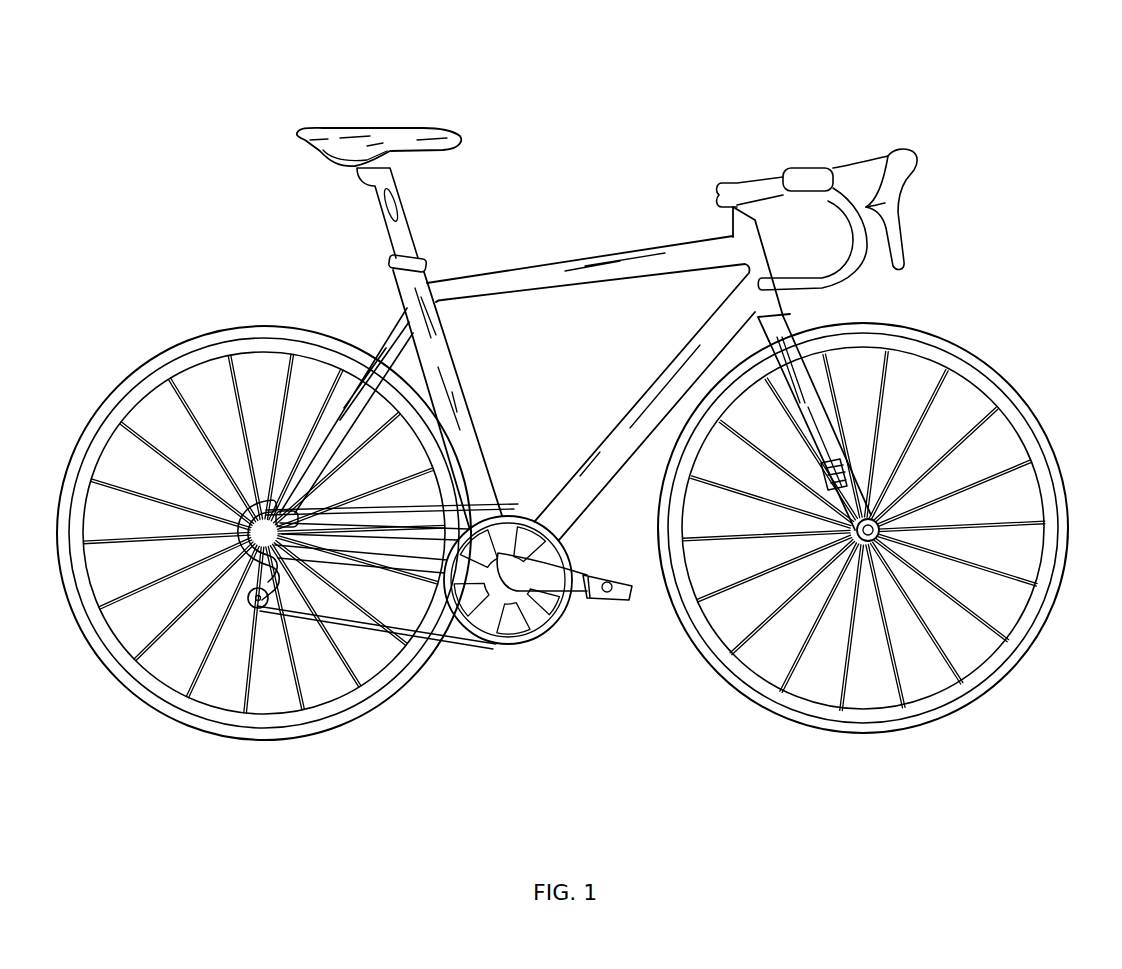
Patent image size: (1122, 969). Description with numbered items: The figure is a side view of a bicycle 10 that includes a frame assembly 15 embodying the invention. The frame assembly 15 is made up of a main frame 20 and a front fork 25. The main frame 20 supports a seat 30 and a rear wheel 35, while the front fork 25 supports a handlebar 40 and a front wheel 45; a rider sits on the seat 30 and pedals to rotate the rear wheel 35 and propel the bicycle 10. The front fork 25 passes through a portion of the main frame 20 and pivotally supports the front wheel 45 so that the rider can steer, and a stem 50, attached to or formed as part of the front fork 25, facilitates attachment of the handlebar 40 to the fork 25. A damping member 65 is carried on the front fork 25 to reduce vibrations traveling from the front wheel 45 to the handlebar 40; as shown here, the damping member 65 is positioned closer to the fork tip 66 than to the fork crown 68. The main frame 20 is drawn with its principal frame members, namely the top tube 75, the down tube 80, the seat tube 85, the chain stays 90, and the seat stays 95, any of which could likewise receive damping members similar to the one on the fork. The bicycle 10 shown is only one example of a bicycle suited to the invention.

The bicycle 10 is at (570, 392).
The frame assembly 15 is at (816, 409).
The main frame 20 is at (529, 409).
The front fork 25 is at (805, 402).
The seat 30 is at (351, 141).
The rear wheel 35 is at (90, 440).
The handlebar 40 is at (818, 182).
The front wheel 45 is at (742, 685).
The stem 50 is at (745, 188).
The damping member 65 is at (846, 460).
The fork tip 66 is at (872, 534).
The fork crown 68 is at (780, 328).
The top tube 75 is at (655, 252).
The down tube 80 is at (652, 437).
The seat tube 85 is at (460, 385).
The chain stays 90 is at (418, 563).
The seat stays 95 is at (392, 337).